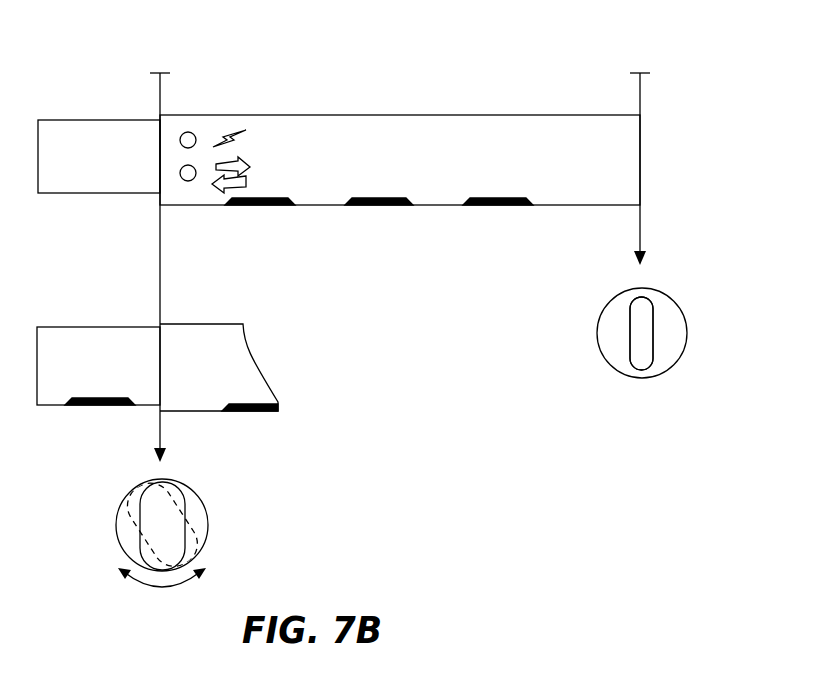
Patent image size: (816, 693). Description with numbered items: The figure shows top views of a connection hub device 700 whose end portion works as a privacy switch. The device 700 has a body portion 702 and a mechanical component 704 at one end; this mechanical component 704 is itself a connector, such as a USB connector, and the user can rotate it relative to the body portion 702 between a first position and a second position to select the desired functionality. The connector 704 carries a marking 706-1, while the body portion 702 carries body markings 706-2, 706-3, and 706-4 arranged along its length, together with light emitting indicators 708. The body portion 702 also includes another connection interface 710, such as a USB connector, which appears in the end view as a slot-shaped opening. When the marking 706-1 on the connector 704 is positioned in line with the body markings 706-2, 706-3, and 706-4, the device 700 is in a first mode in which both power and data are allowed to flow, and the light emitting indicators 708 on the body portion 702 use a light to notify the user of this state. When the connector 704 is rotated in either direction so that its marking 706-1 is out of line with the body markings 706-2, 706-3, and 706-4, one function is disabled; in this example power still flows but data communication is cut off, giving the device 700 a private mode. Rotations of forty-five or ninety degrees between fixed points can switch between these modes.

The connection hub device 700 is at (516, 72).
The body portion 702 is at (358, 163).
The mechanical component 704 is at (76, 170).
The marking 706-1 is at (97, 408).
The body marking 706-2 is at (255, 207).
The body marking 706-3 is at (375, 207).
The body marking 706-4 is at (498, 207).
The light emitting indicators 708 is at (180, 126).
The connection interface 710 is at (631, 328).